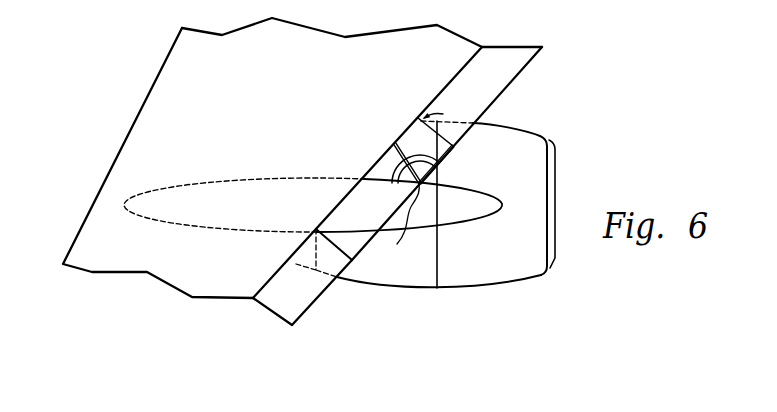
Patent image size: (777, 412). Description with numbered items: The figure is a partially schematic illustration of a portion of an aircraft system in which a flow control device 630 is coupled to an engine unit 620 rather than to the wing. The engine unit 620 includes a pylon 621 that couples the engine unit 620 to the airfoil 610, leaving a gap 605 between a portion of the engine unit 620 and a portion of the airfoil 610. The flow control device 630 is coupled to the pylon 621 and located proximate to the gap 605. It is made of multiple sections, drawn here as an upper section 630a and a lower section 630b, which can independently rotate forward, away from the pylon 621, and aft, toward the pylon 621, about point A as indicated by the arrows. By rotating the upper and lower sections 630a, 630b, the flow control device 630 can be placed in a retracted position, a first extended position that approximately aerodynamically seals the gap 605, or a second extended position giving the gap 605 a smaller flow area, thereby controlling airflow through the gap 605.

The gap 605 is at (465, 160).
The airfoil 610 is at (183, 62).
The engine unit 620 is at (482, 338).
The pylon 621 is at (383, 202).
The flow control device 630 is at (446, 195).
The upper section 630a is at (433, 173).
The lower section 630b is at (404, 150).